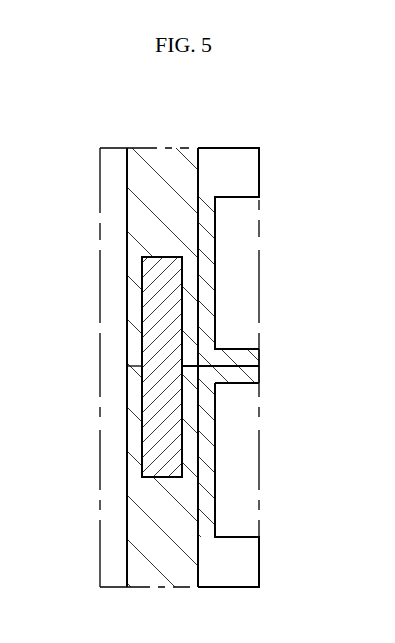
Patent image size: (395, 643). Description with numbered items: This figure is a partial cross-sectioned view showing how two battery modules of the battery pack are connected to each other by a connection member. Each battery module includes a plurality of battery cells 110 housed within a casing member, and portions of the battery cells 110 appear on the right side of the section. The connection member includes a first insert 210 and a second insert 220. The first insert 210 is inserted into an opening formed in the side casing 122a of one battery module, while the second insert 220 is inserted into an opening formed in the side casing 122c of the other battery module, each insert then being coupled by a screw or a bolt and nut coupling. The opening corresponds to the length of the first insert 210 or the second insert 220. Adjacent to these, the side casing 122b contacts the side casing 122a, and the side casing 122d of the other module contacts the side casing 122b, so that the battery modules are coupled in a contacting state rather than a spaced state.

The battery cell 110 is at (238, 258).
The side casing 122a is at (161, 162).
The side casing 122b is at (250, 358).
The side casing 122c is at (160, 573).
The side casing 122d is at (250, 376).
The first insert 210 is at (158, 313).
The second insert 220 is at (157, 430).